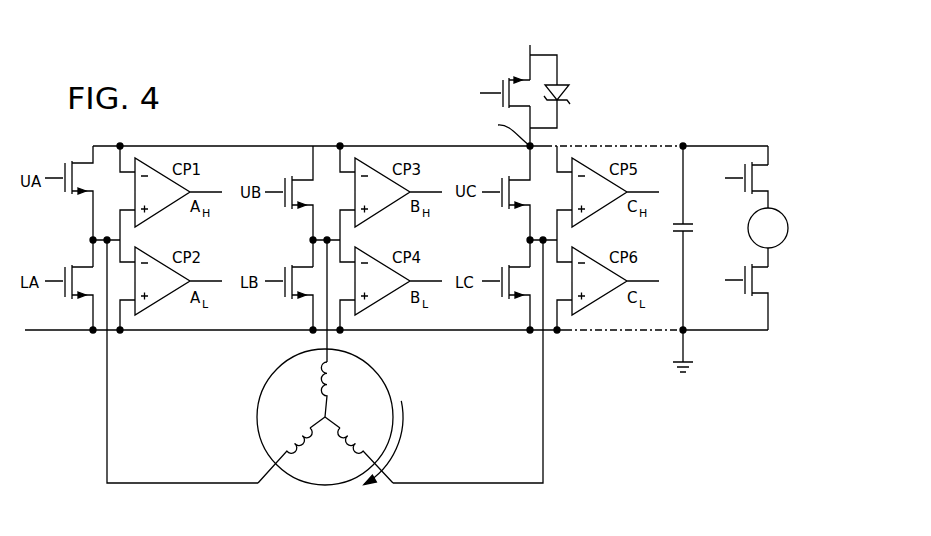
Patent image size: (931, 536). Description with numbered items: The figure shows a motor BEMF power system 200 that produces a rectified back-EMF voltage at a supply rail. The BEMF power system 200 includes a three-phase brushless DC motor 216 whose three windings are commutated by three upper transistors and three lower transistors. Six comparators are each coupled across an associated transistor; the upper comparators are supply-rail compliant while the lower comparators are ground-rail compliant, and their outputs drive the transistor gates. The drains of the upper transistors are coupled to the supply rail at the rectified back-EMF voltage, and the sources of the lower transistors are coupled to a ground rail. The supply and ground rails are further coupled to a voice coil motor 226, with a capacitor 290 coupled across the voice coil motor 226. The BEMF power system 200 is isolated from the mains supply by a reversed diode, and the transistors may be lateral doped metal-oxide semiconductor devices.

The motor BEMF power system 200 is at (602, 98).
The 3-phase brushless DC motor 216 is at (258, 414).
The VCM 226 is at (784, 215).
The capacitor 290 is at (689, 233).